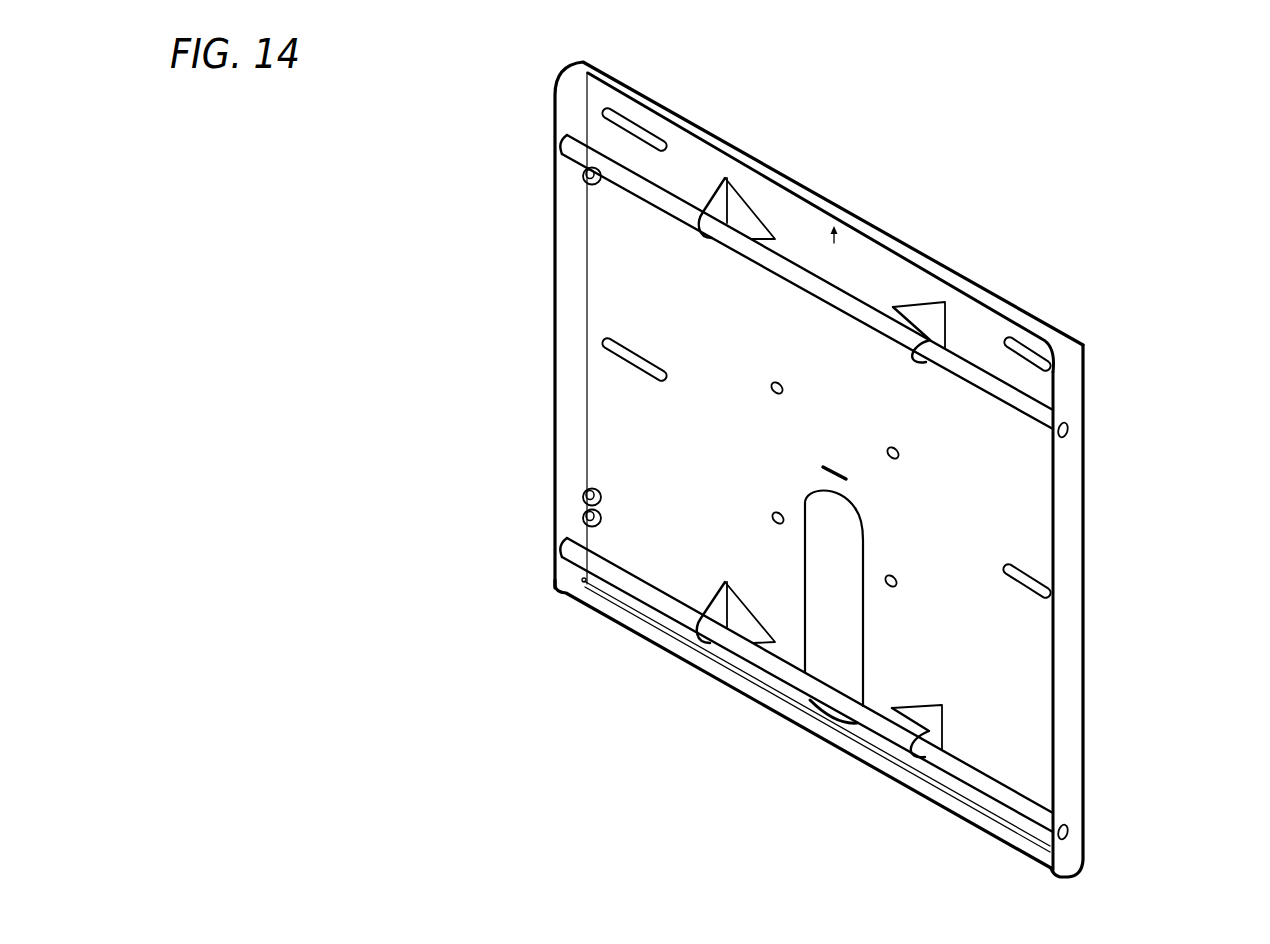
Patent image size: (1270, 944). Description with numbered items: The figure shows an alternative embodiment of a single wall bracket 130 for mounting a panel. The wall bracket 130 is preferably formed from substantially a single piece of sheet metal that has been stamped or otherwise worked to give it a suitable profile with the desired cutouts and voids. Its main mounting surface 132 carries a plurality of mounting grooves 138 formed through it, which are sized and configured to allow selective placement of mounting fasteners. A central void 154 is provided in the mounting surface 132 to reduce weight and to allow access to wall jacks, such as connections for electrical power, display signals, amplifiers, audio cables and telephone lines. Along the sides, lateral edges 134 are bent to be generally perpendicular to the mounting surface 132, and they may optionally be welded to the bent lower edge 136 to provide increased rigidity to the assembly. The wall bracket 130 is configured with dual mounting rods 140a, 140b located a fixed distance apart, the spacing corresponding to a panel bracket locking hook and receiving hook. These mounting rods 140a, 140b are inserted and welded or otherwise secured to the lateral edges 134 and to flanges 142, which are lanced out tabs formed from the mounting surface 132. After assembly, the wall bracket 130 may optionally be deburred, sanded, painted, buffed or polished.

The wall bracket 130 is at (1158, 162).
The mounting surface 132 is at (870, 262).
The lateral edges 134 is at (1065, 508).
The bent lower edge 136 is at (928, 778).
The mounting grooves 138 is at (600, 114).
The mounting rod 140a is at (1027, 410).
The mounting rod 140b is at (1013, 804).
The flanges 142 is at (722, 215).
The central void 154 is at (834, 542).